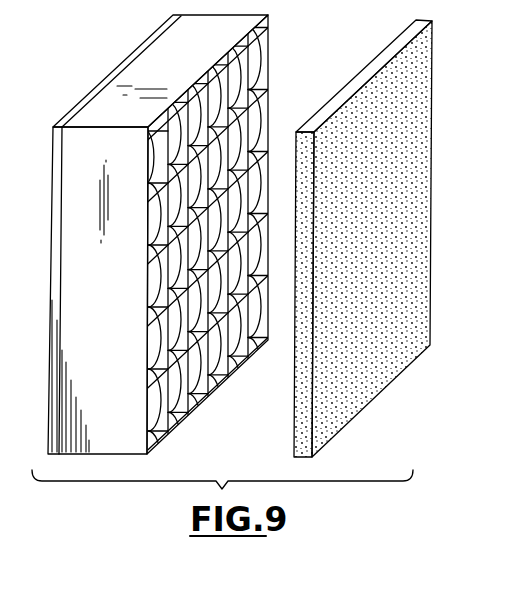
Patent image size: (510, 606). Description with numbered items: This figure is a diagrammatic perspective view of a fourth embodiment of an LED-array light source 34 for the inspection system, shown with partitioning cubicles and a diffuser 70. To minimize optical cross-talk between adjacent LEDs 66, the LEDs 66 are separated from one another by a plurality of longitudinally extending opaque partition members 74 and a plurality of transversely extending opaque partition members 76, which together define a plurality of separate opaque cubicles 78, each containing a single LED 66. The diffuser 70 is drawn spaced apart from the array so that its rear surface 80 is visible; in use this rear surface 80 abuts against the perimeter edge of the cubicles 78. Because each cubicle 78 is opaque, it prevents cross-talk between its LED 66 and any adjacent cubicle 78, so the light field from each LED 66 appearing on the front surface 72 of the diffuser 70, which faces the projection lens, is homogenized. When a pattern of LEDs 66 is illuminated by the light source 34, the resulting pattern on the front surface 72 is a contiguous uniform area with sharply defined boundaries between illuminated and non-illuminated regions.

The light source 34 is at (128, 45).
The LED 66 is at (188, 380).
The diffuser 70 is at (417, 62).
The front surface of the diffuser 72 is at (363, 362).
The longitudinally extending opaque partition member 74 is at (130, 272).
The transversely extending opaque partition member 76 is at (233, 107).
The opaque cubicle 78 is at (278, 43).
The rear surface of the diffuser 80 is at (398, 40).